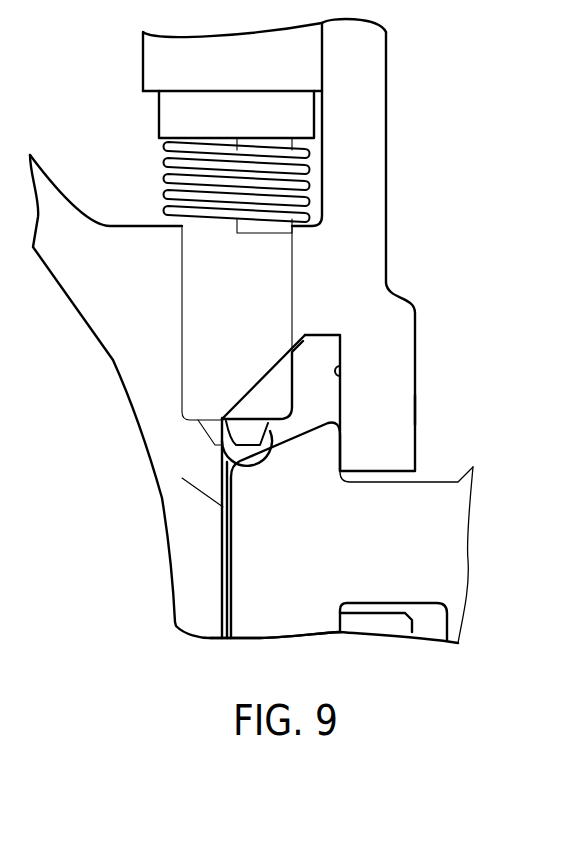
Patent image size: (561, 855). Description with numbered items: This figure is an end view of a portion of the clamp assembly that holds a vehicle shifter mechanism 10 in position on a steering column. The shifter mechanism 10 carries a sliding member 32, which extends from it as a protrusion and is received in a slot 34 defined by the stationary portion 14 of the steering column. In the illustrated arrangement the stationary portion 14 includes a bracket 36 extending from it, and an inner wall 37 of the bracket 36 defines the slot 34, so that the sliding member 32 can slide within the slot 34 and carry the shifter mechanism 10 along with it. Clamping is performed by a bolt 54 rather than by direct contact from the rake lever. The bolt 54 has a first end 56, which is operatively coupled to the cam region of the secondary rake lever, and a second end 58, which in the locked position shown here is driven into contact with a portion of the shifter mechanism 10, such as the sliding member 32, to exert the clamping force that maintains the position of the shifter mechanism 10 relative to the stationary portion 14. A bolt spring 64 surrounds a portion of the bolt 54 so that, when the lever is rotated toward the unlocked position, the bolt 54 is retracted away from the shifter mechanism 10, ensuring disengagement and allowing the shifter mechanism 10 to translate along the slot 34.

The shifter mechanism 10 is at (450, 560).
The stationary portion 14 is at (372, 108).
The sliding member 32 is at (272, 618).
The slot 34 is at (314, 406).
The bracket 36 is at (428, 410).
The inner wall 37 is at (341, 378).
The bolt 54 is at (270, 280).
The first end 56 is at (173, 113).
The second end 58 is at (188, 421).
The bolt spring 64 is at (166, 167).